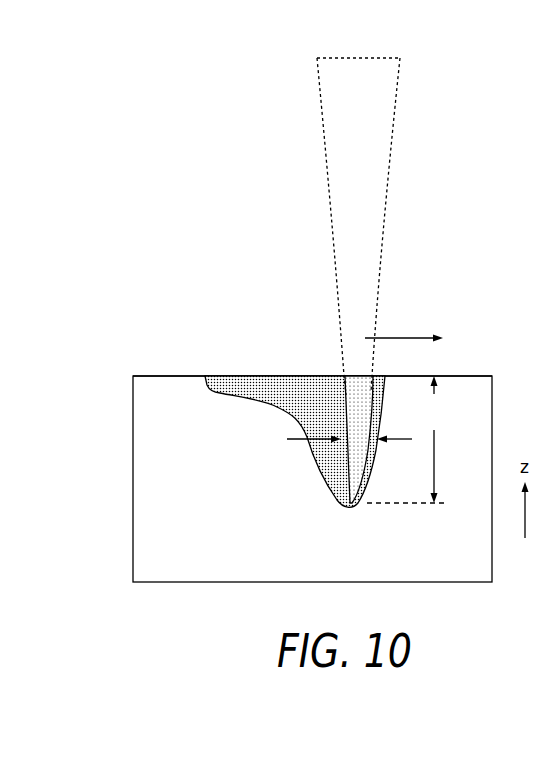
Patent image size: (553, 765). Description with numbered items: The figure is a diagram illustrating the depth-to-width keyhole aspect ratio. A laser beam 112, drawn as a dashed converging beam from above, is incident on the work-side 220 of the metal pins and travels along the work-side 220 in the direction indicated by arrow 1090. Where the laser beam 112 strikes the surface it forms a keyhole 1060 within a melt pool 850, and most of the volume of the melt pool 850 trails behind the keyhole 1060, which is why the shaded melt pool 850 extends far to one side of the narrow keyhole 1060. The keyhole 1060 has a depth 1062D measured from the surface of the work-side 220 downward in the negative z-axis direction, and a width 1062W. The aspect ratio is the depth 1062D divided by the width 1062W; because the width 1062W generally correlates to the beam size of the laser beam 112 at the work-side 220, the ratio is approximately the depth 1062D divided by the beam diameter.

The laser beam 112 is at (372, 120).
The work-side 220 is at (180, 364).
The melt pool 850 is at (275, 390).
The keyhole 1060 is at (355, 413).
The arrow 1090 is at (413, 338).
The width 1062W is at (318, 440).
The depth 1062D is at (416, 439).